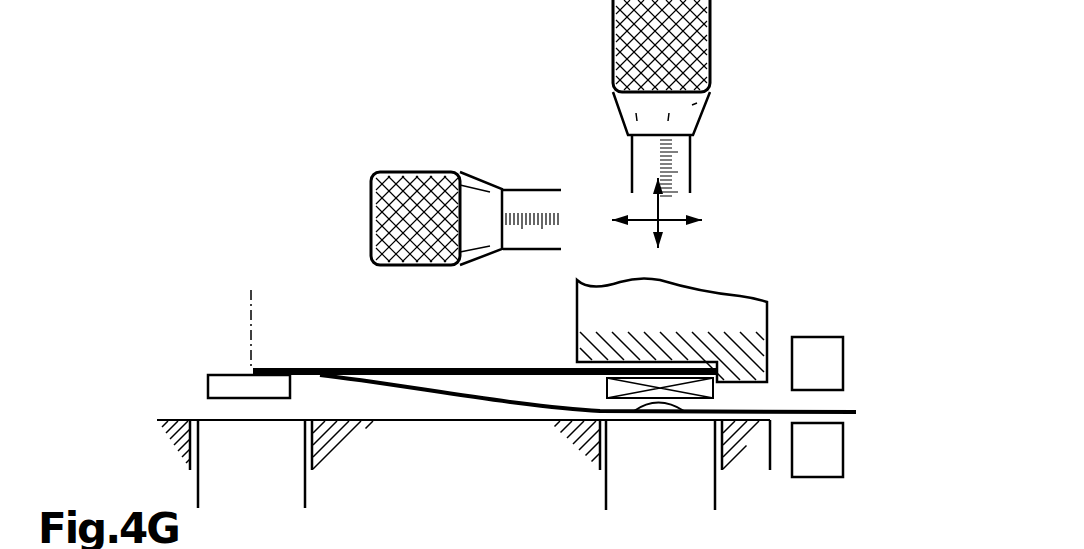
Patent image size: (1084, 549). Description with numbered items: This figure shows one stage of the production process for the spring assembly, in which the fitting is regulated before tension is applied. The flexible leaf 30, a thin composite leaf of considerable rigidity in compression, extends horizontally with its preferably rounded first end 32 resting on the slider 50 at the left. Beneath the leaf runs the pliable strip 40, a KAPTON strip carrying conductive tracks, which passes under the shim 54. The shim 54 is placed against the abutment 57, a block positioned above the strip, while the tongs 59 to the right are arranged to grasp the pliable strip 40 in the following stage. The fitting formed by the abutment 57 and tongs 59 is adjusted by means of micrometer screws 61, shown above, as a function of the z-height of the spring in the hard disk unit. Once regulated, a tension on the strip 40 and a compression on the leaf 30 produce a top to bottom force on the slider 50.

The flexible leaf 30 is at (470, 368).
The first end 32 is at (262, 368).
The pliable strip 40 is at (455, 392).
The slider 50 is at (208, 389).
The shim 54 is at (672, 372).
The abutment 57 is at (586, 318).
The tongs 59 is at (826, 348).
The micrometer screws 61 is at (618, 135).